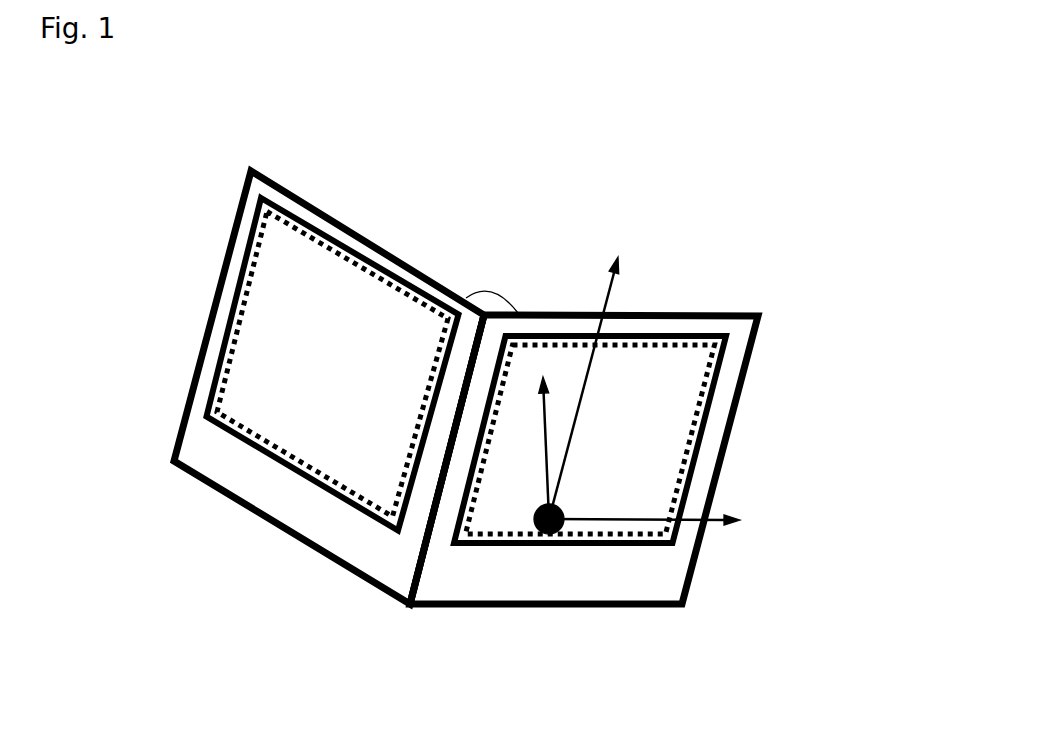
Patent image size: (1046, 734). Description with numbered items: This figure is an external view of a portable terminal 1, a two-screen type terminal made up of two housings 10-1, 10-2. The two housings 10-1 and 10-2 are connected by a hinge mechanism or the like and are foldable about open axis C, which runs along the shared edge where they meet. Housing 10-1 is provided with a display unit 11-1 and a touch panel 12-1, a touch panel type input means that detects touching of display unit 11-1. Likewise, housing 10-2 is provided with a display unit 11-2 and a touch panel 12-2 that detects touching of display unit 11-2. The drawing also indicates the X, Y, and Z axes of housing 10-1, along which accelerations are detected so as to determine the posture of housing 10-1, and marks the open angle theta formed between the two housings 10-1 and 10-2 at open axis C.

The portable terminal 1 is at (679, 182).
The housing 10-1 is at (707, 312).
The housing 10-2 is at (237, 212).
The display unit 11-1 is at (720, 372).
The display unit 11-2 is at (215, 368).
The touch panel 12-1 is at (692, 455).
The touch panel 12-2 is at (240, 268).
The open axis C is at (417, 587).